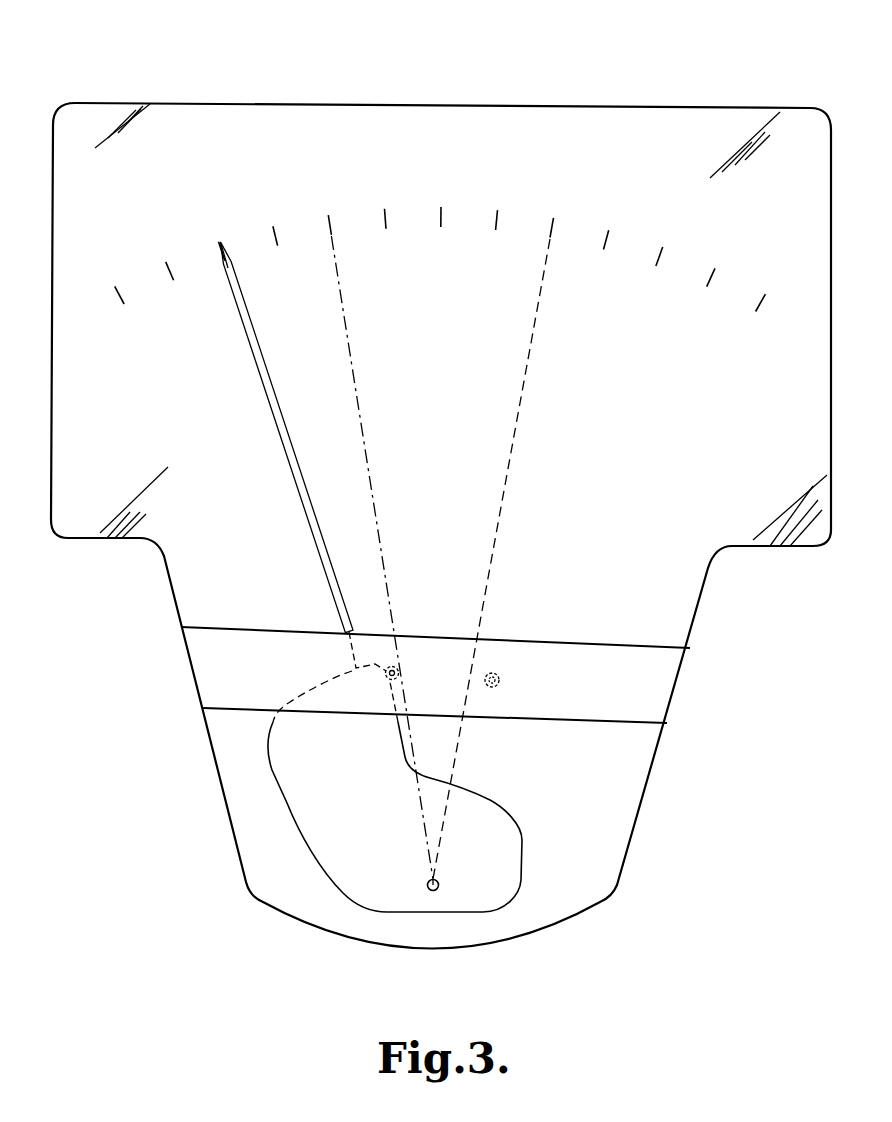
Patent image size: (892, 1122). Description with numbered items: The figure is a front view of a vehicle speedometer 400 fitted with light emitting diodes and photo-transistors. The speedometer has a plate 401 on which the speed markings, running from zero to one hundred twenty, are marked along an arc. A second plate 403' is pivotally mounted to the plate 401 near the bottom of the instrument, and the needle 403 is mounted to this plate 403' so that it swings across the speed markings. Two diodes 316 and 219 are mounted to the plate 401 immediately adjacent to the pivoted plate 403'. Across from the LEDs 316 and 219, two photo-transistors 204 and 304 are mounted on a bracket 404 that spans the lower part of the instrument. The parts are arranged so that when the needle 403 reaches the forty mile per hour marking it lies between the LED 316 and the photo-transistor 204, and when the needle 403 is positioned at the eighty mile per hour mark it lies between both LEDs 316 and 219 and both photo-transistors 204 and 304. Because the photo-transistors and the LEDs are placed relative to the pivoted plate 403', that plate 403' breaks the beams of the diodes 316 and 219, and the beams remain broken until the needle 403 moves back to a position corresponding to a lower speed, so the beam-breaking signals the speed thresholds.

The vehicle speedometer 400 is at (444, 90).
The plate 401 is at (353, 113).
The needle 403 is at (298, 456).
The plate 403' is at (432, 791).
The bracket 404 is at (665, 689).
The diode 316 is at (396, 666).
The photo-transistor 204 is at (400, 677).
The diode 219 is at (498, 674).
The photo-transistor 304 is at (490, 687).